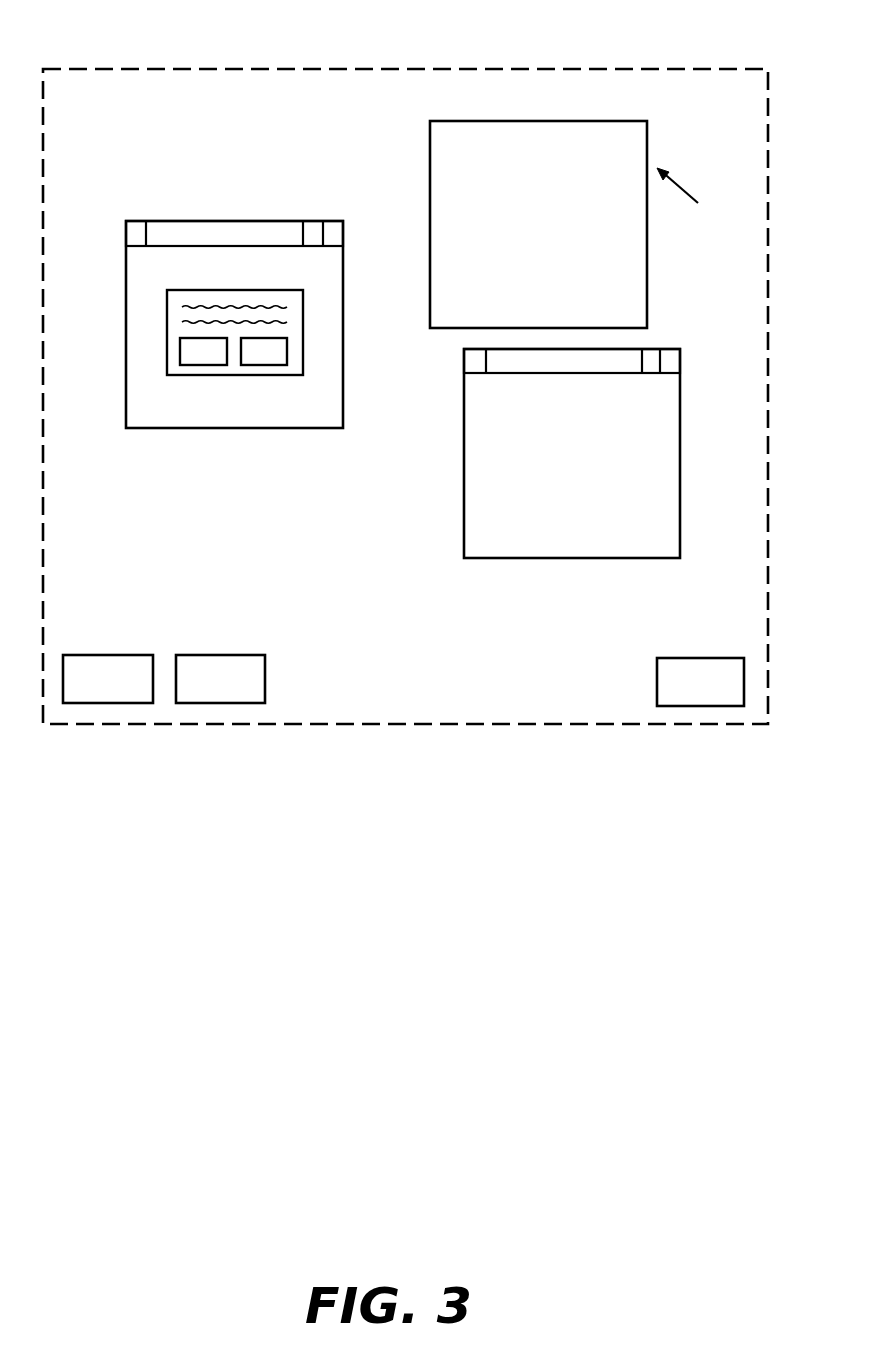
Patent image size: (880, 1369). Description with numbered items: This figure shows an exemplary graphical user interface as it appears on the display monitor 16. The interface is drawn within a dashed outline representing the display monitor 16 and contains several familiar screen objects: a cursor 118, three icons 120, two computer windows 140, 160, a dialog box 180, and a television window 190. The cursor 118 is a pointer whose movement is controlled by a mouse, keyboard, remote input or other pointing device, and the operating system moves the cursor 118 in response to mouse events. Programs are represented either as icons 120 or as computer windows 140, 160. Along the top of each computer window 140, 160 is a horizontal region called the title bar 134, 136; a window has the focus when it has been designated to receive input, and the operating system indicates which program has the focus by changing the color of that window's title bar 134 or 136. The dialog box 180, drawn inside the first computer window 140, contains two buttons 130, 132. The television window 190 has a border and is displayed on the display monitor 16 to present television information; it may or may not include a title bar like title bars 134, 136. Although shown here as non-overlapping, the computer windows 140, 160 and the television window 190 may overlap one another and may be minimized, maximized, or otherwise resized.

The display monitor 16 is at (600, 65).
The cursor 118 is at (689, 192).
The icons 120 is at (235, 655).
The button 130 is at (202, 365).
The button 132 is at (265, 365).
The title bar 134 is at (132, 232).
The title bar 136 is at (673, 362).
The computer window 140 is at (126, 322).
The computer window 160 is at (680, 450).
The dialog box 180 is at (222, 290).
The television window 190 is at (647, 282).